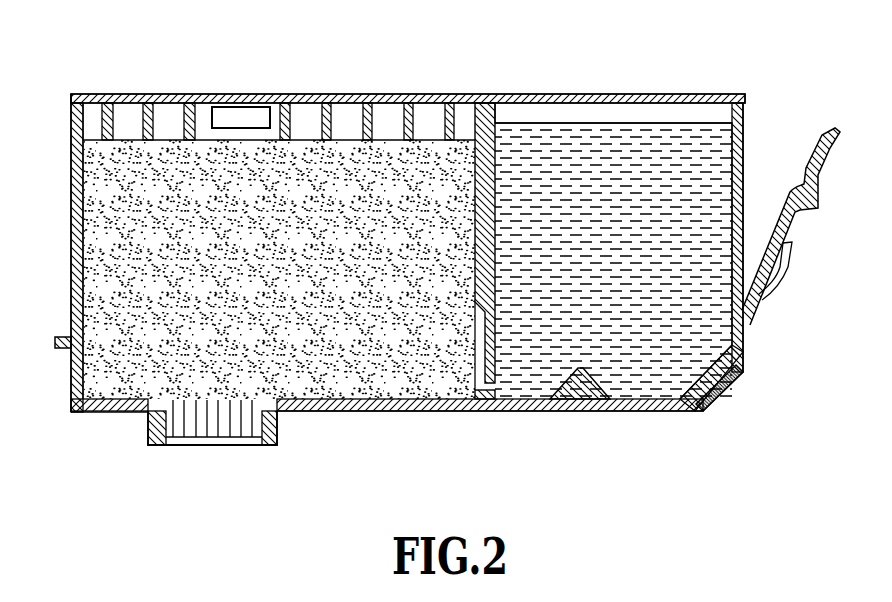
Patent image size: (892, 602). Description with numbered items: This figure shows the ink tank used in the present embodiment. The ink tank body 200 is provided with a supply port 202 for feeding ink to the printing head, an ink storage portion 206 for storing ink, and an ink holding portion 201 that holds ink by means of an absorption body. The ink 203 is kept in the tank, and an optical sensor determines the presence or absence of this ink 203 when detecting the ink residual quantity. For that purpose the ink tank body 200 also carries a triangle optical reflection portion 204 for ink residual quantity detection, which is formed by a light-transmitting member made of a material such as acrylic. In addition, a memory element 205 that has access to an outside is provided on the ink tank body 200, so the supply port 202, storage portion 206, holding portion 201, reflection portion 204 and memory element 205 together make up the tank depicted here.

The ink tank body 200 is at (178, 93).
The ink holding portion 201 is at (117, 199).
The supply port 202 is at (212, 423).
The ink 203 is at (684, 135).
The reflection portion 204 is at (588, 411).
The memory element 205 is at (725, 395).
The ink storage portion 206 is at (600, 112).